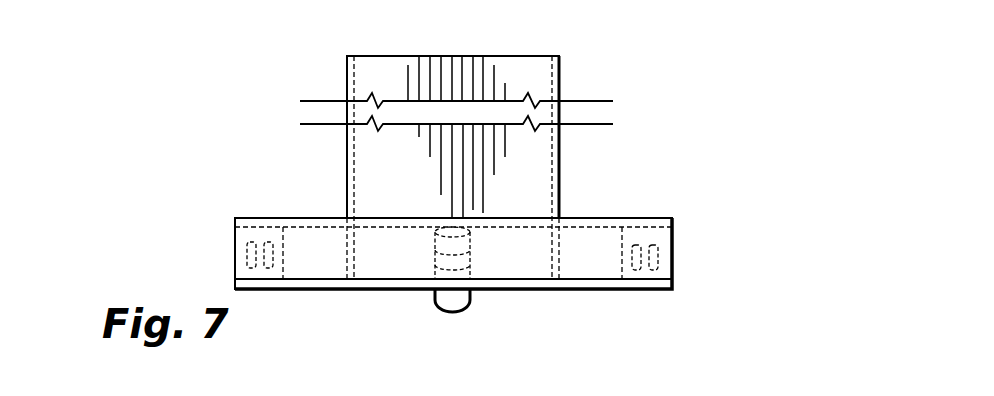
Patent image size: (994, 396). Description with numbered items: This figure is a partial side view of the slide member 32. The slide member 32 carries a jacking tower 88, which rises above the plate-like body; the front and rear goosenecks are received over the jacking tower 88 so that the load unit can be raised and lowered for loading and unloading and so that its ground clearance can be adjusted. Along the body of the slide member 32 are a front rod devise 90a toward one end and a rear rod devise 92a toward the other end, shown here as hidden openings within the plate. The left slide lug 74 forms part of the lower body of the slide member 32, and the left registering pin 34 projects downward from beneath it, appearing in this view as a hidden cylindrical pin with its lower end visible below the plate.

The slide member 32 is at (692, 227).
The jacking tower 88 is at (534, 178).
The rear rod devise 92a is at (247, 257).
The front rod devise 90a is at (657, 257).
The left slide lug 74 is at (613, 262).
The left registering pin 34 is at (443, 298).